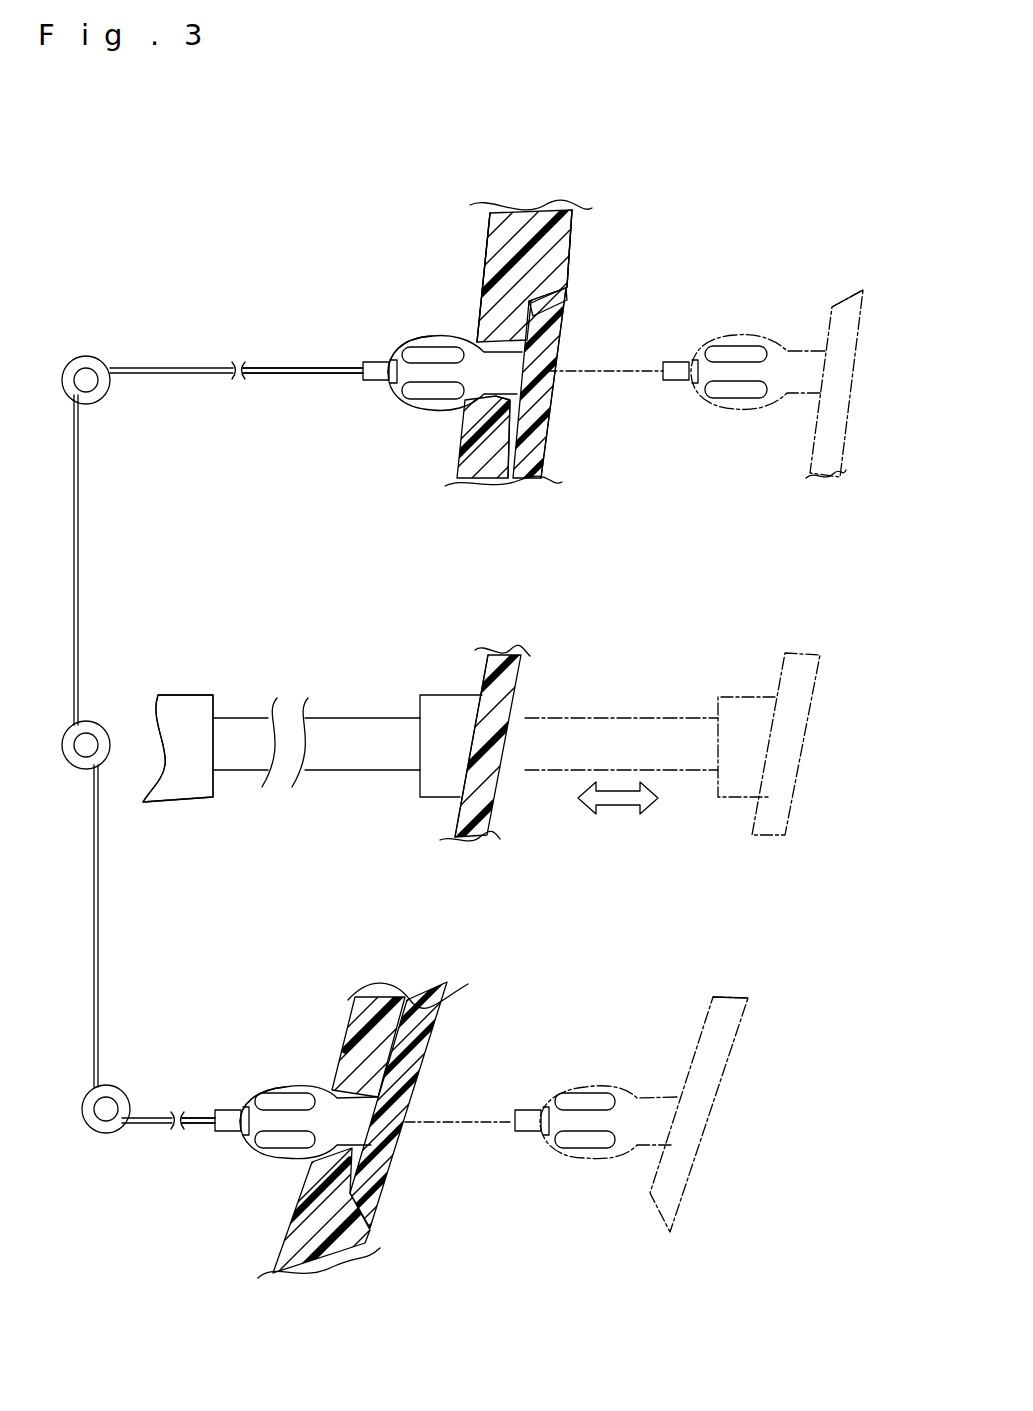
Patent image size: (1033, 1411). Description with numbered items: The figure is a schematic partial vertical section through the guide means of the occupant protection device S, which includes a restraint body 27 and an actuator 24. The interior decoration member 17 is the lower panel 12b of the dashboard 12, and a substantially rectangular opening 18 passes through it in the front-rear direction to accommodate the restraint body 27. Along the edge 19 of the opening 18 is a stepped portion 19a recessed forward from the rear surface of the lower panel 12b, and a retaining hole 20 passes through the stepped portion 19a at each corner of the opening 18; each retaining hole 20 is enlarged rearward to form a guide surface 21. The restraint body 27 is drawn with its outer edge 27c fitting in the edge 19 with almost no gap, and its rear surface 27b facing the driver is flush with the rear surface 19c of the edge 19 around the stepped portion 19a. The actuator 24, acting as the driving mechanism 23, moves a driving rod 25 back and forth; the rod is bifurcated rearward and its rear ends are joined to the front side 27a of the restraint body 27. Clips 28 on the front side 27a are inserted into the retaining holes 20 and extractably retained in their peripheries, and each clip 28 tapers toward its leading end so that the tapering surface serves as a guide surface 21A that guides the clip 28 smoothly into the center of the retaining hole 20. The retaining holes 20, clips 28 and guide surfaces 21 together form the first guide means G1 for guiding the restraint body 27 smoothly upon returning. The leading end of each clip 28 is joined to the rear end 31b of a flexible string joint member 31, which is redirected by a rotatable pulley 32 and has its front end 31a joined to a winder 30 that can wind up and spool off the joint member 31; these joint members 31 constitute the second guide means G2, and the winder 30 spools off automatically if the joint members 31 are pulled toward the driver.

The lower panel 12b is at (535, 217).
The dashboard 12 is at (483, 277).
The interior decoration member 17 is at (569, 248).
The opening 18 is at (443, 670).
The edge 19 is at (490, 247).
The stepped portion 19a is at (490, 327).
The rear surface 19c is at (570, 250).
The retaining hole 20 is at (485, 397).
The guide surface 21 is at (527, 307).
The guide surface 21A is at (413, 337).
The driving mechanism 23 is at (182, 800).
The actuator 24 is at (190, 717).
The driving rod 25 is at (375, 735).
The restraint body 27 is at (520, 695).
The front side 27a is at (472, 812).
The rear surface 27b is at (563, 313).
The outer edge 27c is at (540, 432).
The clip 28 is at (397, 392).
The winder 30 is at (96, 722).
The joint member 31 is at (167, 370).
The front end 31a is at (73, 657).
The rear end 31b is at (337, 372).
The pulley 32 is at (76, 363).
The first guide means G1 is at (428, 449).
The second guide means G2 is at (224, 303).
The occupant protection device S is at (118, 1193).